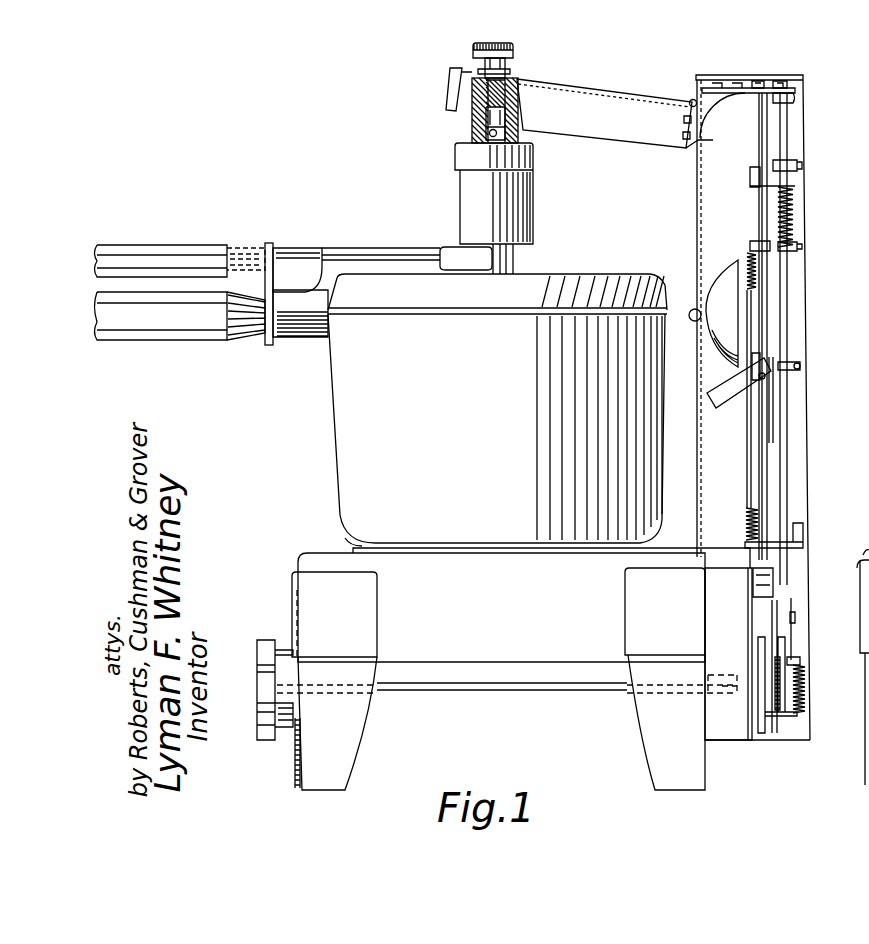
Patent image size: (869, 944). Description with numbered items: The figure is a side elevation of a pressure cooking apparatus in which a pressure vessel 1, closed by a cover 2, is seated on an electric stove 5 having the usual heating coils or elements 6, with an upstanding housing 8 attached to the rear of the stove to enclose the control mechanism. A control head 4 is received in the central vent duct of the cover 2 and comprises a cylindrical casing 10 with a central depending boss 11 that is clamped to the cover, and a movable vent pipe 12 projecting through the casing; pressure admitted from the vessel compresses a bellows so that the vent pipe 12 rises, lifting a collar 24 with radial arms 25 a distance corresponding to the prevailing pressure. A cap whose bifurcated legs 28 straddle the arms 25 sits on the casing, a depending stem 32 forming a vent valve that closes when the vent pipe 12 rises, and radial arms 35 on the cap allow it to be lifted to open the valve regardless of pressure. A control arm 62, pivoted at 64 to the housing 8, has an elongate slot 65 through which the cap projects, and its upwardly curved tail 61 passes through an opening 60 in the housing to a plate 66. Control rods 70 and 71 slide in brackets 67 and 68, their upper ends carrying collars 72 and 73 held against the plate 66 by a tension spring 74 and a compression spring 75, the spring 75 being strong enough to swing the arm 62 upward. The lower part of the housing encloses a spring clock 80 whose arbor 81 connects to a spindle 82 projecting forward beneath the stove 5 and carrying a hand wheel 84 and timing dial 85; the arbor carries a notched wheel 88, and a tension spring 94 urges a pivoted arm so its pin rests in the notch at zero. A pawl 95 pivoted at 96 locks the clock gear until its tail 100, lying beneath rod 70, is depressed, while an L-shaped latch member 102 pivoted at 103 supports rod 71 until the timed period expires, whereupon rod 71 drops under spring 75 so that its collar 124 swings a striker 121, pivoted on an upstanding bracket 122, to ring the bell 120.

The pressure vessel 1 is at (496, 428).
The cover 2 is at (537, 272).
The control head 4 is at (440, 209).
The electric stove 5 is at (501, 607).
The heating coils or elements 6 is at (350, 543).
The upstanding housing 8 is at (693, 210).
The cylindrical casing 10 is at (467, 182).
The central depending boss 11 is at (513, 250).
The vent pipe 12 is at (472, 105).
The collar 24 is at (477, 130).
The radial arms 25 is at (470, 142).
The legs 28 is at (472, 120).
The depending stem 32 is at (513, 82).
The radial arms 35 is at (505, 70).
The opening 60 is at (690, 145).
The extension or tail 61 is at (713, 143).
The control arm 62 is at (603, 102).
The pivot 64 is at (692, 100).
The elongate slot 65 is at (459, 67).
The plate 66 is at (783, 102).
The bracket 67 is at (792, 184).
The bracket 68 is at (793, 530).
The control rod 70 is at (768, 438).
The control rod 71 is at (790, 458).
The collar 72 is at (758, 84).
The collar 73 is at (792, 84).
The tension spring 74 is at (750, 257).
The compression spring 75 is at (792, 217).
The spring clock 80 is at (728, 654).
The arbor 81 is at (738, 697).
The spindle 82 is at (497, 691).
The hand wheel 84 is at (260, 645).
The timing dial 85 is at (295, 758).
The wheel 88 is at (800, 700).
The tension spring 94 is at (795, 692).
The pawl 95 is at (773, 602).
The pivot 96 is at (773, 582).
The tail 100 is at (707, 557).
The L-shaped latch member 102 is at (792, 632).
The pivot 103 is at (797, 617).
The bell 120 is at (718, 278).
The striker 121 is at (728, 393).
The upstanding bracket 122 is at (773, 398).
The collar 124 is at (797, 362).